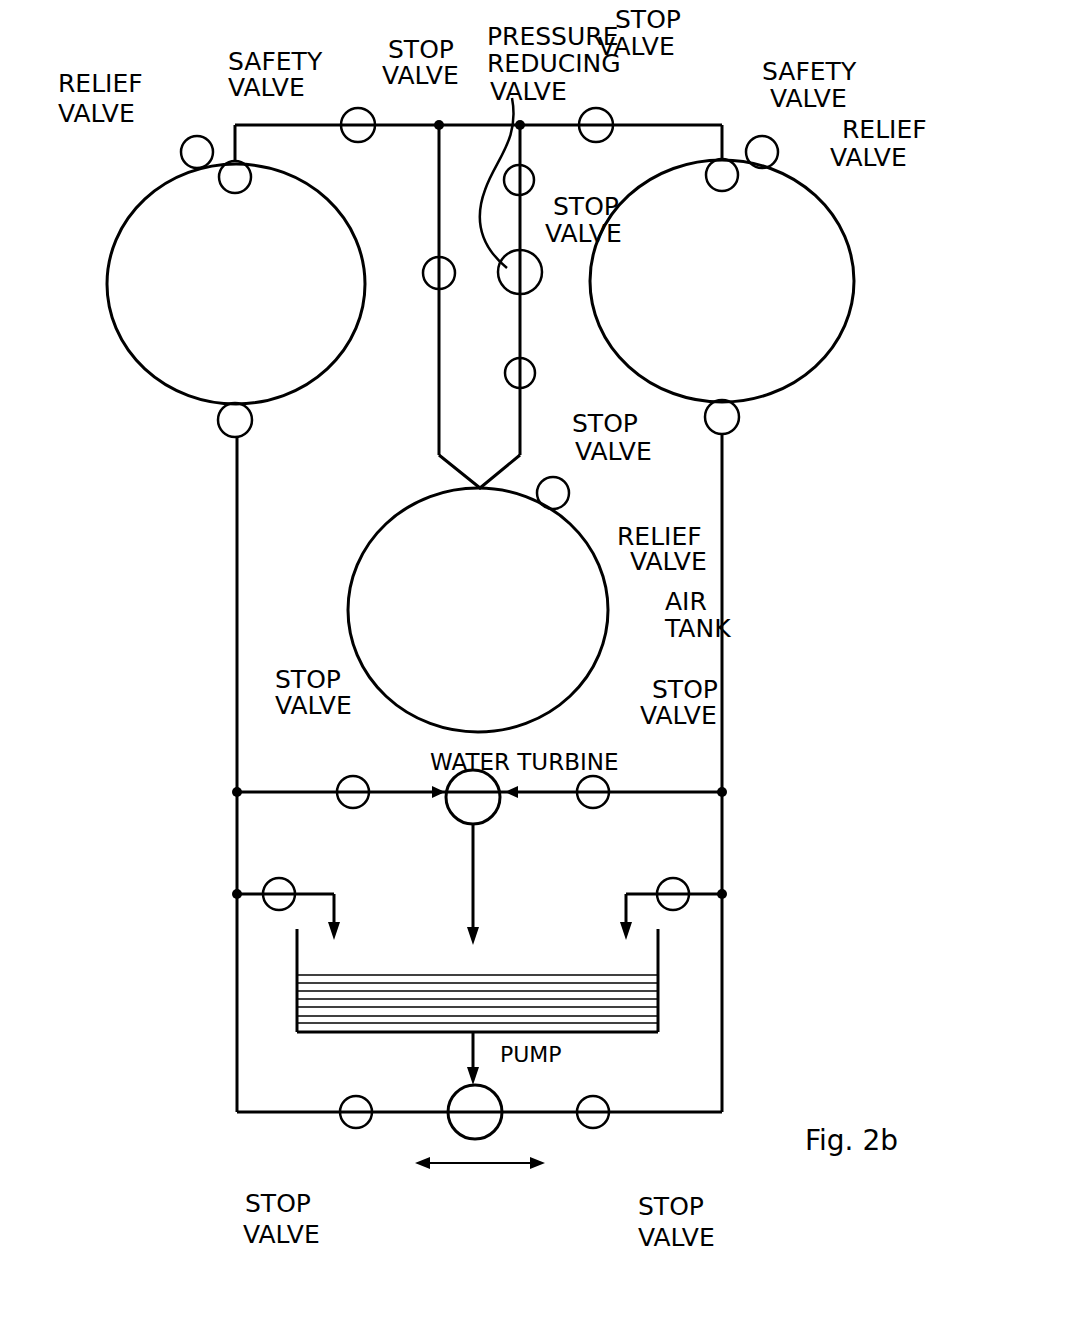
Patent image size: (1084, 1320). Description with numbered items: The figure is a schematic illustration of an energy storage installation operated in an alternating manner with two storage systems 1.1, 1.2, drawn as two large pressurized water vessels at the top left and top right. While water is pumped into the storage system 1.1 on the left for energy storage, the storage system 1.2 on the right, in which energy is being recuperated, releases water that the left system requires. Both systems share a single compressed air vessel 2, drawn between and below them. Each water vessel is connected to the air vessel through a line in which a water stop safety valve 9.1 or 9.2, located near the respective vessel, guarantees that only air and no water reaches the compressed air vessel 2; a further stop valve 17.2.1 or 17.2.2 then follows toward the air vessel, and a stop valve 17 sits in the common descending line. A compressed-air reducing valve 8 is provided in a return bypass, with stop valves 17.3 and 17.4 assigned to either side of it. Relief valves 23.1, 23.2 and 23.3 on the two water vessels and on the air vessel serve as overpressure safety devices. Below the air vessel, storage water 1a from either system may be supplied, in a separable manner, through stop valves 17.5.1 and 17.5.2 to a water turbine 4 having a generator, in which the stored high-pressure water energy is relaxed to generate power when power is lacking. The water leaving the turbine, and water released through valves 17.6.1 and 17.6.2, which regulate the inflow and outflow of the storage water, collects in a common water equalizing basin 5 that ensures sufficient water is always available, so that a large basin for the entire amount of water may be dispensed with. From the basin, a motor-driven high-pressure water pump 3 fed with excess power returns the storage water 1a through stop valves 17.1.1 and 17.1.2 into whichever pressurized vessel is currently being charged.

The storage system 1.1 is at (138, 367).
The storage system 1.2 is at (850, 318).
The storage water 1a is at (622, 1020).
The compressed air vessel 2 is at (607, 612).
The high-pressure water pump 3 is at (483, 1110).
The water turbine 4 is at (467, 805).
The water equalizing basin 5 is at (658, 987).
The compressed-air reducing valve 8 is at (525, 277).
The water stop safety valve 9.1 is at (238, 175).
The water stop safety valve 9.2 is at (722, 175).
The stop valve 17 is at (439, 277).
The stop valve 17.1.1 is at (354, 1110).
The stop valve 17.1.2 is at (593, 1112).
The stop valve 17.2.1 is at (358, 125).
The stop valve 17.2.2 is at (596, 125).
The stop valve 17.3 is at (519, 180).
The stop valve 17.4 is at (520, 373).
The stop valve 17.5.1 is at (353, 792).
The stop valve 17.5.2 is at (593, 792).
The valve 17.6.1 is at (279, 894).
The valve 17.6.2 is at (673, 894).
The relief valve 23.1 is at (197, 153).
The relief valve 23.2 is at (762, 152).
The relief valve 23.3 is at (553, 493).